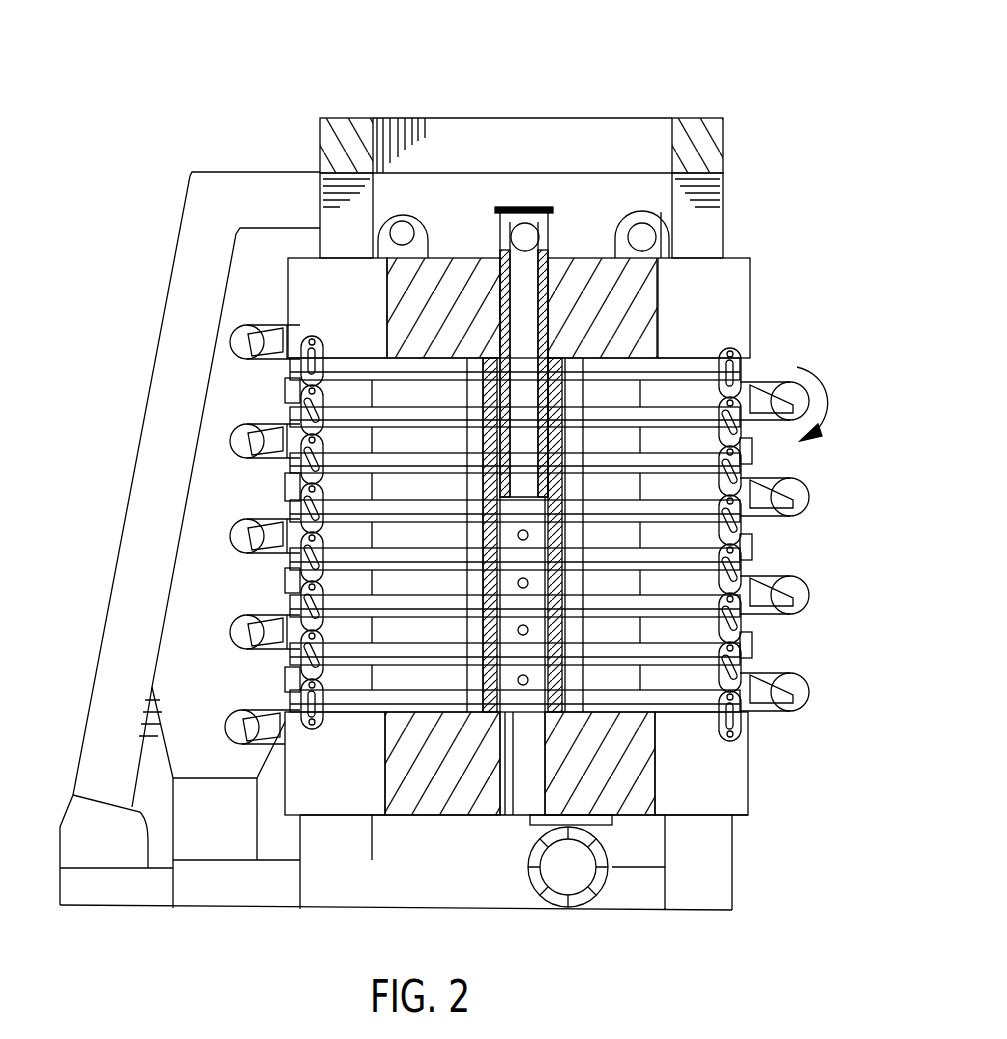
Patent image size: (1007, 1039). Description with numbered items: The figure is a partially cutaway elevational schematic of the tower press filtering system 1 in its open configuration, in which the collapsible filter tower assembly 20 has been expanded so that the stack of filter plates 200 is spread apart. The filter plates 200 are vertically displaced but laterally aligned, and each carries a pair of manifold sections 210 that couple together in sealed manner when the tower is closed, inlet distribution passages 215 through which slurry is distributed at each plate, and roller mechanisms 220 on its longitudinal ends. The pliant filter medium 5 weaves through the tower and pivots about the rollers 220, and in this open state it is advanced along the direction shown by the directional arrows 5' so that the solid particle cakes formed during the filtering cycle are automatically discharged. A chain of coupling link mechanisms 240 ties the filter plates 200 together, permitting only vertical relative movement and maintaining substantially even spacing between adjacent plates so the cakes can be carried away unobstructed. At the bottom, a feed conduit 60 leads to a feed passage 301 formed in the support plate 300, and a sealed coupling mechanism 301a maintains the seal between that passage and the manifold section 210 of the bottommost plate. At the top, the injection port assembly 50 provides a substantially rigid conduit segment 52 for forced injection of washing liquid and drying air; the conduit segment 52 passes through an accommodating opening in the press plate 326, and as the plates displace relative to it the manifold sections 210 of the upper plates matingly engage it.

The tower press filtering system 1 is at (766, 188).
The filter medium 5 is at (792, 356).
The directional arrows 5' is at (838, 399).
The filter tower assembly 20 is at (700, 543).
The injection port assembly 50 is at (552, 237).
The rigid conduit segment 52 is at (558, 305).
The feed conduit 60 is at (598, 885).
The filter plate 200 is at (700, 590).
The manifold section 210 is at (605, 673).
The inlet distribution passages 215 is at (530, 682).
The roller mechanisms 220 is at (800, 492).
The coupling link mechanisms 240 is at (290, 722).
The support plate 300 is at (735, 770).
The feed passage 301 is at (515, 795).
The sealed coupling mechanism 301a is at (478, 714).
The press plate 326 is at (715, 290).